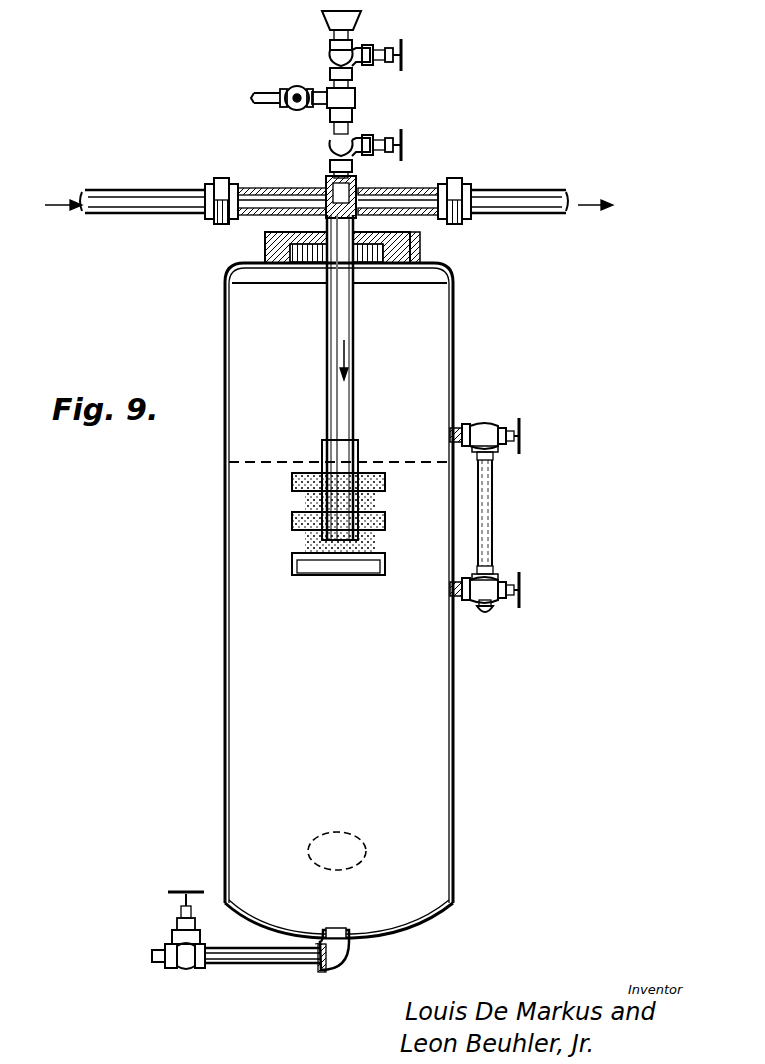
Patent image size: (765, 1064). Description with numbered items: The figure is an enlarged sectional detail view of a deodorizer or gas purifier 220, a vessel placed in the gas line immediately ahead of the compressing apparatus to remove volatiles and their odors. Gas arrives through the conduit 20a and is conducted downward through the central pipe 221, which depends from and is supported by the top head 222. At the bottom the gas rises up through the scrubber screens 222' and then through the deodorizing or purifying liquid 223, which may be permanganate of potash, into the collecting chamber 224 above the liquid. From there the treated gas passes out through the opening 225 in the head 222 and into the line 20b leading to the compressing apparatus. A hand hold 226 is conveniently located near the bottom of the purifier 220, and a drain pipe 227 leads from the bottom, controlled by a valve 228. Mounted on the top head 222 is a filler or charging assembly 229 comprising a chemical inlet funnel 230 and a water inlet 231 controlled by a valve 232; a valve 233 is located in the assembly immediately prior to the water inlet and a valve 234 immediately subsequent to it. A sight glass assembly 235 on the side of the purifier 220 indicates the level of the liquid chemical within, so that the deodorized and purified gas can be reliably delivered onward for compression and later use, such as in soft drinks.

The conduit 20a is at (138, 209).
The line 20b is at (530, 208).
The deodorizer or gas purifier 220 is at (498, 668).
The central pipe 221 is at (327, 358).
The head 222 is at (300, 247).
The scrubber screens 222' is at (277, 565).
The deodorizing or purifying liquid 223 is at (257, 522).
The collecting chamber 224 is at (423, 318).
The opening 225 is at (420, 249).
The hand hold 226 is at (365, 851).
The drain pipe 227 is at (275, 965).
The valve 228 is at (172, 914).
The filler or charging assembly 229 is at (350, 122).
The chemical inlet funnel 230 is at (350, 19).
The water inlet 231 is at (264, 80).
The valve 232 is at (300, 85).
The valve 233 is at (405, 49).
The valve 234 is at (405, 143).
The sight glass assembly 235 is at (487, 515).